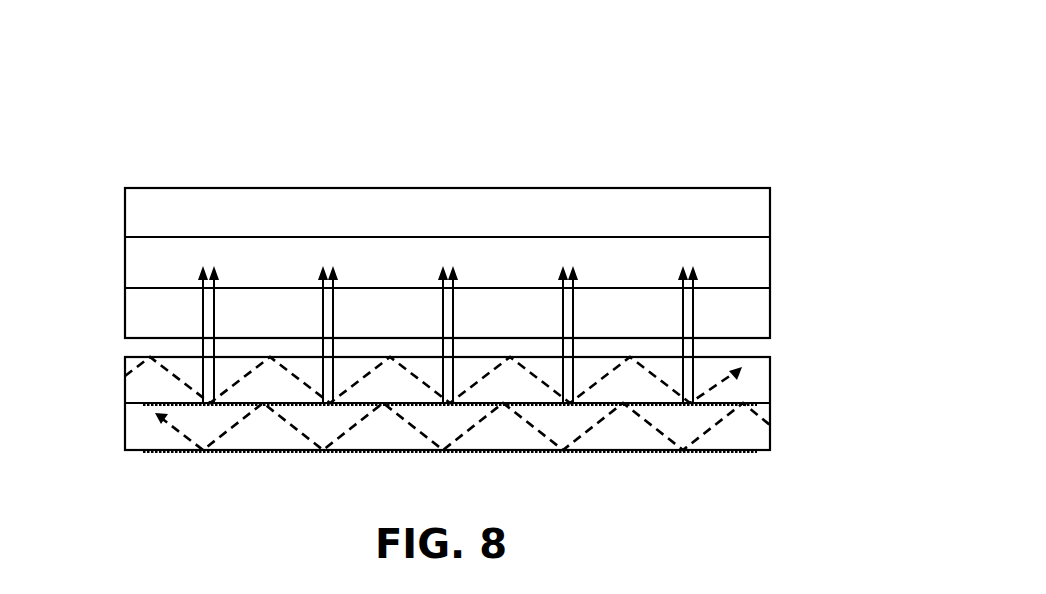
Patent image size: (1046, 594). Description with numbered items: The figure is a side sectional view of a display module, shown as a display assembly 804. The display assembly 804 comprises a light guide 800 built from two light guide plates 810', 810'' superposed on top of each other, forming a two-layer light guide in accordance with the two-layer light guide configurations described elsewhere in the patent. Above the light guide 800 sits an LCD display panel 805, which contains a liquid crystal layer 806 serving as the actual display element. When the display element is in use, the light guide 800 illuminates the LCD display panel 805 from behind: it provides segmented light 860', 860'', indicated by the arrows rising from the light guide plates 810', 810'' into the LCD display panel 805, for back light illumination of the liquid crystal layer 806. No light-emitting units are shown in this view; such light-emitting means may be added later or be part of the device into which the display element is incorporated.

The display assembly 804 is at (121, 121).
The LCD display panel 805 is at (578, 188).
The liquid crystal layer 806 is at (724, 254).
The light guide 800 is at (806, 355).
The light guide plate 810' is at (412, 462).
The light guide plate 810'' is at (383, 351).
The segmented light 860' is at (443, 256).
The segmented light 860'' is at (453, 257).